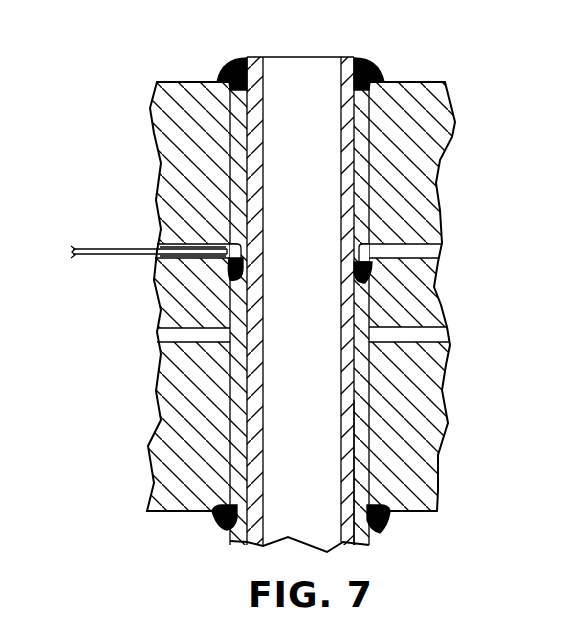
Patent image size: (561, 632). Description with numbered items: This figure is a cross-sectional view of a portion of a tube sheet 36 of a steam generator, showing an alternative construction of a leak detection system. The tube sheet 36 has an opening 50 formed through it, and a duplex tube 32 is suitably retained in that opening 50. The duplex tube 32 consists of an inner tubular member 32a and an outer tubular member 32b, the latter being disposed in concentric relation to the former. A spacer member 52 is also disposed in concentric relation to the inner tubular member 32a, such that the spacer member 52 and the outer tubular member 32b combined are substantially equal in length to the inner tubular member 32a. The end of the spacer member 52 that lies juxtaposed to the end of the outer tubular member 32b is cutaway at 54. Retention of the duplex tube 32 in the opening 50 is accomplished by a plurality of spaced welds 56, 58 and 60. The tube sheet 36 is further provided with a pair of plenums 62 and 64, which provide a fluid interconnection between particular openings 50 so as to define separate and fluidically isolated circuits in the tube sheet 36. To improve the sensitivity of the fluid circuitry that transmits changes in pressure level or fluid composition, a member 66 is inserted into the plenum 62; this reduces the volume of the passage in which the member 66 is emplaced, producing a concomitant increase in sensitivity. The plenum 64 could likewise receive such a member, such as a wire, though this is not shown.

The duplex tube 32 is at (375, 545).
The inner tubular member 32a is at (340, 465).
The outer tubular member 32b is at (363, 472).
The tube sheet 36 is at (457, 136).
The opening 50 is at (357, 139).
The spacer member 52 is at (237, 182).
The cutaway 54 is at (415, 243).
The weld 56 is at (366, 68).
The weld 58 is at (372, 273).
The weld 60 is at (220, 527).
The plenum 62 is at (372, 258).
The plenum 64 is at (444, 333).
The member 66 is at (97, 248).